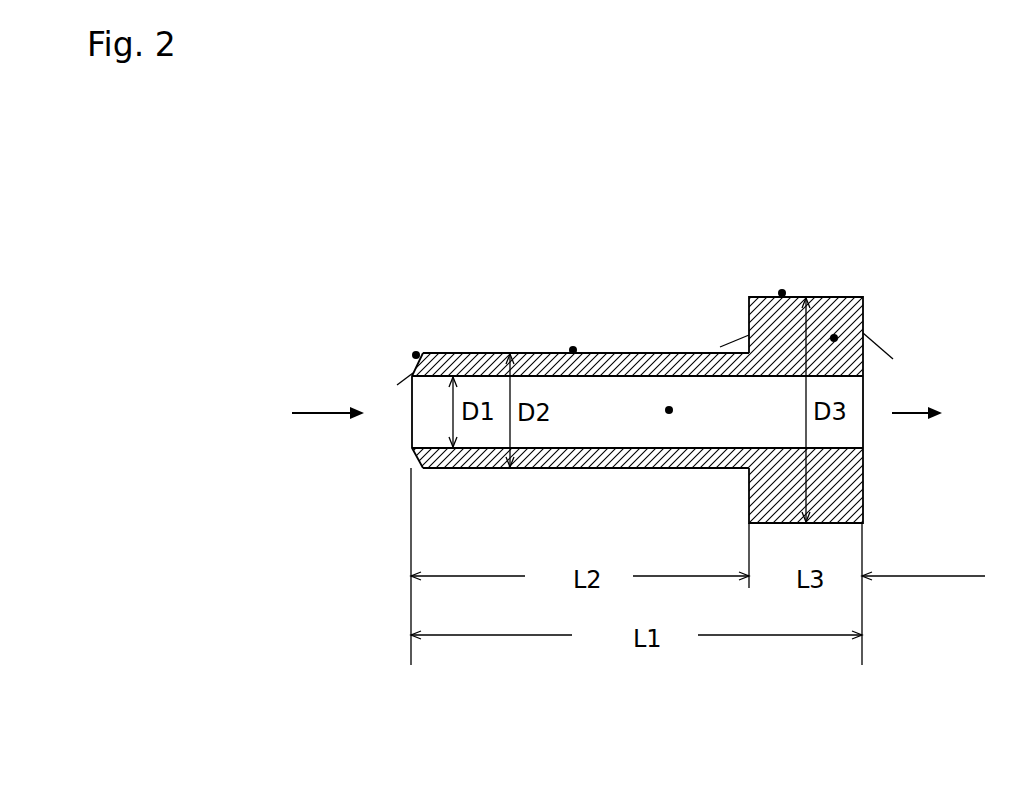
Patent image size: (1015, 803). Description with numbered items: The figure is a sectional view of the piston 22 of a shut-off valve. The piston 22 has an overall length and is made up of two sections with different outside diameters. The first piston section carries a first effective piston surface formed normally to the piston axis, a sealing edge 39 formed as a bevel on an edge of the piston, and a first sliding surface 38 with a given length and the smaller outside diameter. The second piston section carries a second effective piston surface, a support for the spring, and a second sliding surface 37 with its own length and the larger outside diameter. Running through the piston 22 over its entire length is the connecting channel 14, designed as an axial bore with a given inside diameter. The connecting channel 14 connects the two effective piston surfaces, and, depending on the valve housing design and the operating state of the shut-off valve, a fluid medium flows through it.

The connecting channel 14 is at (669, 410).
The piston 22 is at (834, 338).
The second sliding surface 37 is at (782, 292).
The first sliding surface 38 is at (573, 350).
The sealing edge 39 is at (416, 354).